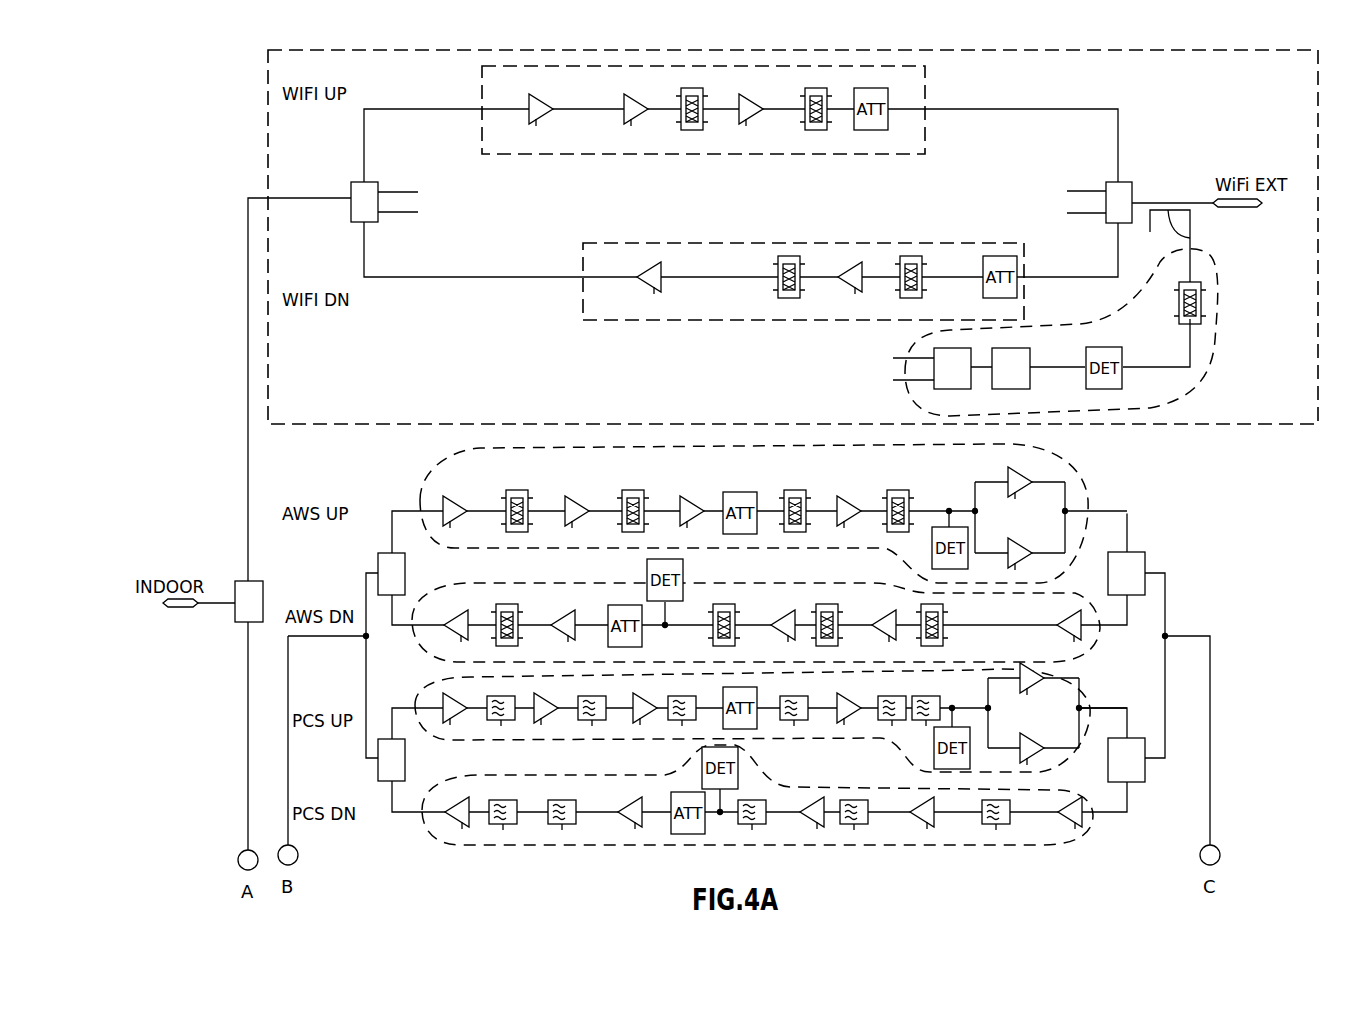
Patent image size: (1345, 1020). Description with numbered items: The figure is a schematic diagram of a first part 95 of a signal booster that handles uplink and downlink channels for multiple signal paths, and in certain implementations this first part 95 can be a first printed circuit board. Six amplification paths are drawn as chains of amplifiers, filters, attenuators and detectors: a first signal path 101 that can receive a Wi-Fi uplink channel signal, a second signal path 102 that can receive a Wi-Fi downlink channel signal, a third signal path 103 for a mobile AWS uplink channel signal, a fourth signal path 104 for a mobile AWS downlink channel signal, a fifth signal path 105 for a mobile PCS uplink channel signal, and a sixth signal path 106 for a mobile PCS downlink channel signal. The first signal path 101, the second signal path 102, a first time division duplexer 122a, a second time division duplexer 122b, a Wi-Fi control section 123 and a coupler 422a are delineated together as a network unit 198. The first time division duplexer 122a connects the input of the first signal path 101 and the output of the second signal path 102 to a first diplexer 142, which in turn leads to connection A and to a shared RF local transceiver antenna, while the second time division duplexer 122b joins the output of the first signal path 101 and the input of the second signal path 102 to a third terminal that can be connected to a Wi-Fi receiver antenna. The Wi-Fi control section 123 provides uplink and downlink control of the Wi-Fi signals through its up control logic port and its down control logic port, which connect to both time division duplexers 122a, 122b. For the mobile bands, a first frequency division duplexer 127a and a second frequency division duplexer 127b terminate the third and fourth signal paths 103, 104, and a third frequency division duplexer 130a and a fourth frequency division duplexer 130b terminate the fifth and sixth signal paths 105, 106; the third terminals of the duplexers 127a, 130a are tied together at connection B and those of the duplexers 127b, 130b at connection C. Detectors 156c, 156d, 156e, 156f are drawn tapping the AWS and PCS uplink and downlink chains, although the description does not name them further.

The first part of the signal booster 95 is at (206, 120).
The network unit 198 is at (268, 68).
The first signal path 101 is at (482, 97).
The second signal path 102 is at (583, 320).
The first time division duplexer 122a is at (351, 214).
The second time division duplexer 122b is at (1132, 190).
The coupler 422a is at (1193, 240).
The Wi-Fi control section 123 is at (1192, 385).
The third signal path 103 is at (773, 505).
The fourth signal path 104 is at (786, 614).
The fifth signal path 105 is at (785, 718).
The sixth signal path 106 is at (752, 815).
The first frequency division duplexer 127a is at (378, 565).
The second frequency division duplexer 127b is at (1135, 552).
The third frequency division duplexer 130a is at (378, 772).
The fourth frequency division duplexer 130b is at (1135, 782).
The first diplexer 142 is at (235, 613).
The AWS uplink detector 156c is at (949, 527).
The AWS downlink detector 156d is at (685, 583).
The PCS uplink detector 156e is at (933, 748).
The PCS downlink detector 156f is at (740, 770).